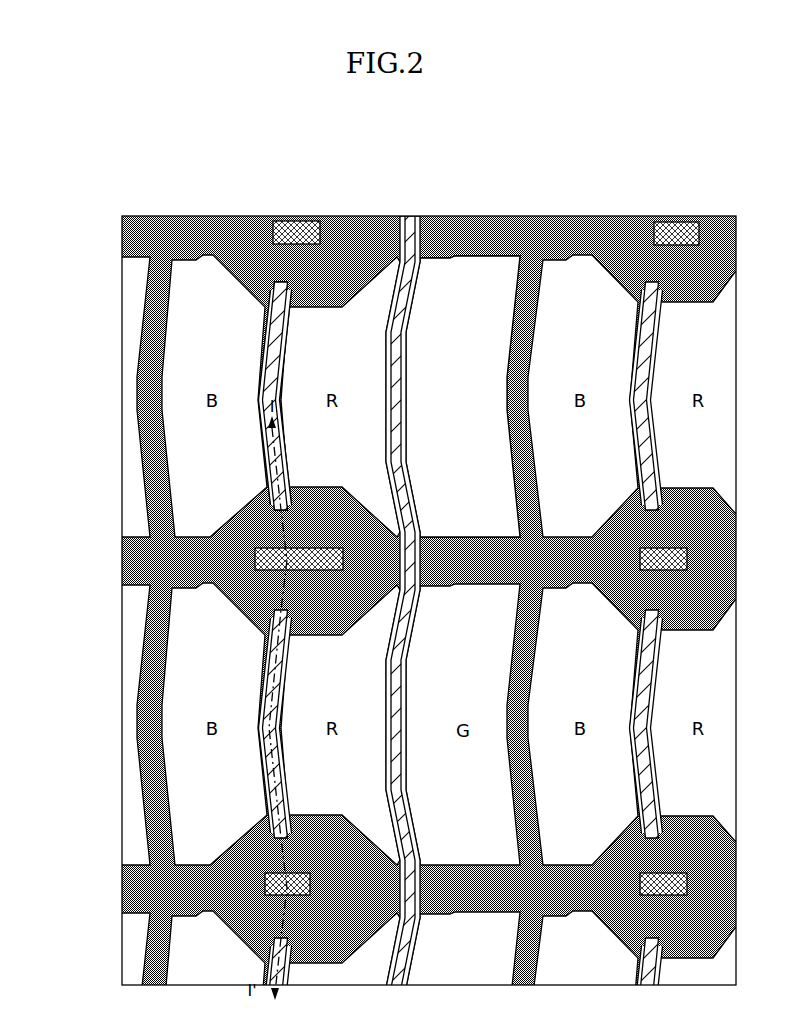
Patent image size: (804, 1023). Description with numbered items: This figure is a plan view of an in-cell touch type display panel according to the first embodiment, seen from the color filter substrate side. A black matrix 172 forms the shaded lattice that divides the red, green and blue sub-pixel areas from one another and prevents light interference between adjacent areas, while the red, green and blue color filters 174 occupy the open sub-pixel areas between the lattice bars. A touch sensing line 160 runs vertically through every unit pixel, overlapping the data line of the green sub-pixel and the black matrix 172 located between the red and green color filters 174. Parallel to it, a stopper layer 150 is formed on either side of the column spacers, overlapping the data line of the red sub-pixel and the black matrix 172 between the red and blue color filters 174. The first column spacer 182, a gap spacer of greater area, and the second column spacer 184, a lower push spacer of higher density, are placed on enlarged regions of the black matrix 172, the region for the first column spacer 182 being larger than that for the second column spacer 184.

The stopper layer 150 is at (280, 281).
The touch sensing line 160 is at (413, 216).
The black matrix 172 is at (530, 230).
The color filters 174 is at (477, 263).
The first column spacer 182 is at (255, 565).
The second column spacer 184 is at (675, 222).